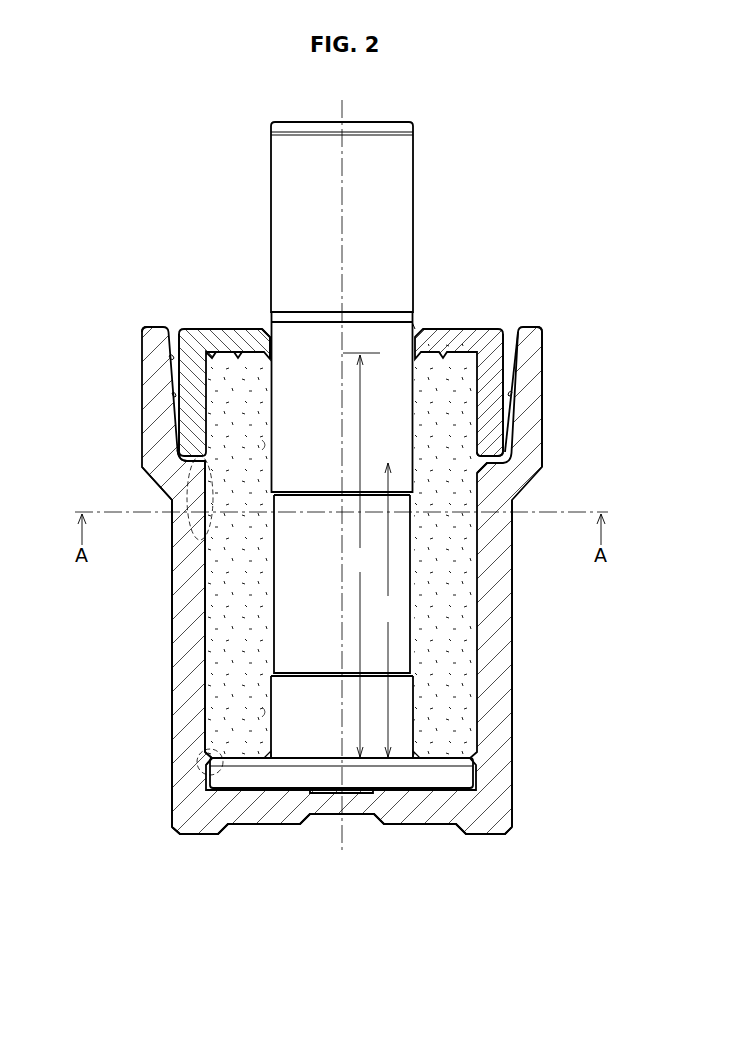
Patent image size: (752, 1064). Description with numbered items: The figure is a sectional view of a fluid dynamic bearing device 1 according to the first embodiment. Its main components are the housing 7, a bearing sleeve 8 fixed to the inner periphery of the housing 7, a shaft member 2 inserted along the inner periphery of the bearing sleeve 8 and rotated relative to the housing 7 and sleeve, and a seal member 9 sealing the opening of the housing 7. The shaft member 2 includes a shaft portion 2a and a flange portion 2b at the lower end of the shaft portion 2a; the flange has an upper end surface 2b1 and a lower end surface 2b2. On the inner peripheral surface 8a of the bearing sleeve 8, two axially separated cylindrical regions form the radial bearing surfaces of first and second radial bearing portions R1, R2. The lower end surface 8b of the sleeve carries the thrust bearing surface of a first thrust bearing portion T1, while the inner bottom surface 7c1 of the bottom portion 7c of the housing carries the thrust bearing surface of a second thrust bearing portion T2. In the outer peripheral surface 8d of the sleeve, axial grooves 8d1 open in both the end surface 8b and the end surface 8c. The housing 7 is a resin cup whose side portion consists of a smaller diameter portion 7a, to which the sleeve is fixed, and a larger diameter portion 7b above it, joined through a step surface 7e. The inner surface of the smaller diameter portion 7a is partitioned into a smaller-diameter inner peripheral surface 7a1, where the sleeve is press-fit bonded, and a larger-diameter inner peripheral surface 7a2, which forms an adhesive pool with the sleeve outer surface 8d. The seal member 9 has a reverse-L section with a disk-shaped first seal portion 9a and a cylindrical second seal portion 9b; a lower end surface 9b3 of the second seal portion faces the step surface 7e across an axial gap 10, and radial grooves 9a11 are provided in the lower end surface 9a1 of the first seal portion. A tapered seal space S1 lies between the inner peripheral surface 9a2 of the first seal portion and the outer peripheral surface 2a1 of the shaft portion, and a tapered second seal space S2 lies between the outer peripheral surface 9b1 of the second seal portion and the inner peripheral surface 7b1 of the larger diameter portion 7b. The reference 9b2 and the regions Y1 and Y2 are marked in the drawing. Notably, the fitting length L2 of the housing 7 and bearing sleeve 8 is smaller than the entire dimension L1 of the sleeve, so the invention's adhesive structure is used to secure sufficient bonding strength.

The fluid dynamic bearing device 1 is at (563, 293).
The shaft member 2 is at (384, 111).
The shaft portion 2a is at (283, 207).
The outer peripheral surface of the shaft portion 2a1 is at (414, 178).
The flange portion 2b is at (467, 777).
The upper end surface of the flange portion 2b1 is at (463, 760).
The lower end surface of the flange portion 2b2 is at (460, 793).
The housing 7 is at (512, 633).
The smaller diameter portion 7a is at (498, 570).
The smaller-diameter inner peripheral surface 7a1 is at (215, 595).
The larger-diameter inner peripheral surface 7a2 is at (222, 530).
The larger diameter portion 7b is at (527, 363).
The inner peripheral surface of the larger diameter portion 7b1 is at (175, 352).
The bottom portion 7c is at (403, 815).
The inner bottom surface 7c1 is at (212, 766).
The step surface 7e is at (178, 457).
The bearing sleeve 8 is at (462, 671).
The inner peripheral surface of the bearing sleeve 8a is at (277, 618).
The lower end surface of the bearing sleeve 8b is at (222, 797).
The end surface of the bearing sleeve 8c is at (460, 350).
The outer peripheral surface of the bearing sleeve 8d is at (207, 657).
The axial grooves 8d1 is at (470, 598).
The seal member 9 is at (484, 337).
The first seal portion 9a is at (242, 338).
The lower end surface of the first seal portion 9a1 is at (510, 398).
The inner peripheral surface of the first seal portion 9a2 is at (273, 327).
The radial grooves 9a11 is at (267, 351).
The second seal portion 9b is at (188, 408).
The outer peripheral surface of the second seal portion 9b1 is at (480, 430).
The seal elastic lower lip 9b2 is at (503, 455).
The lower end surface of the second seal portion 9b3 is at (487, 465).
The axial gap 10 is at (487, 468).
The seal space S1 is at (422, 322).
The second seal space S2 is at (512, 335).
The first radial bearing portion R1 is at (259, 448).
The second radial bearing portion R2 is at (259, 715).
The first thrust bearing portion T1 is at (153, 737).
The second thrust bearing portion T2 is at (253, 791).
The enlarged region Y1 is at (177, 490).
The enlarged region Y2 is at (198, 763).
The entire dimension of the bearing sleeve L1 is at (361, 555).
The fitting length L2 is at (388, 610).